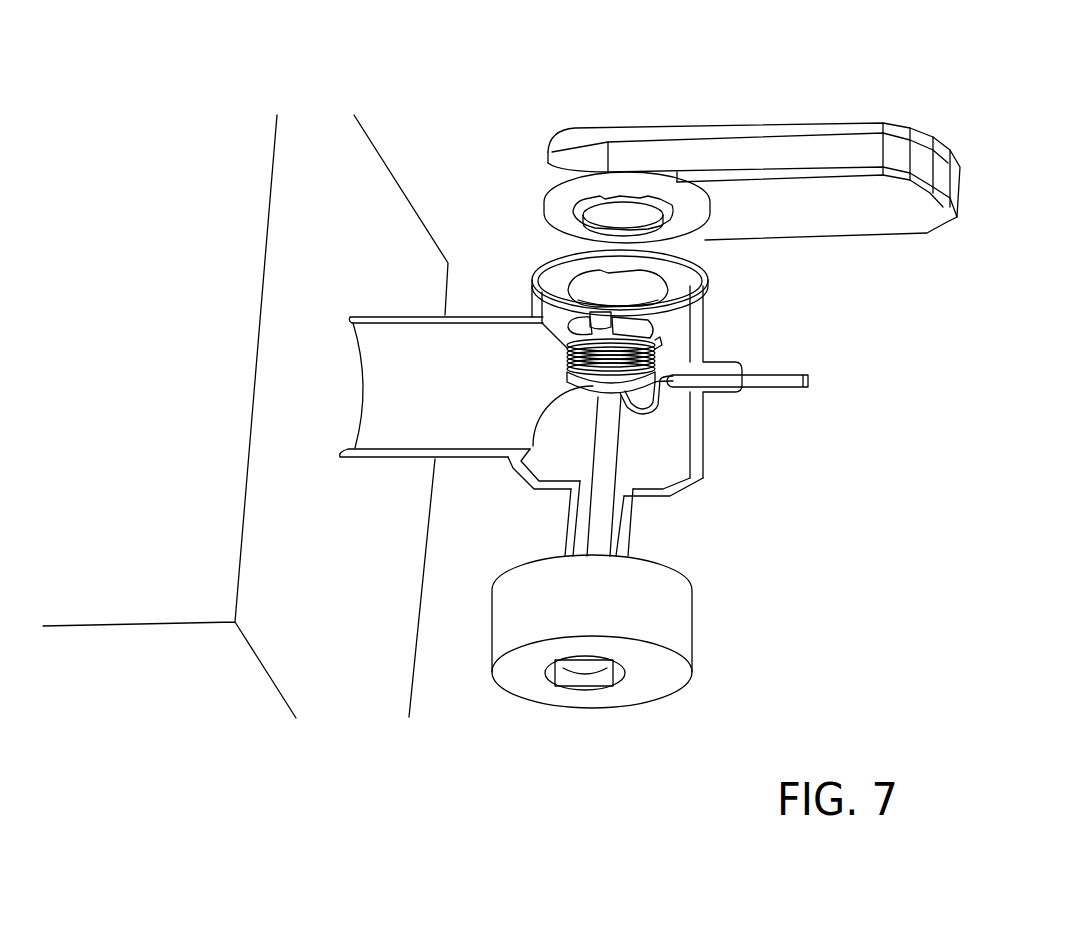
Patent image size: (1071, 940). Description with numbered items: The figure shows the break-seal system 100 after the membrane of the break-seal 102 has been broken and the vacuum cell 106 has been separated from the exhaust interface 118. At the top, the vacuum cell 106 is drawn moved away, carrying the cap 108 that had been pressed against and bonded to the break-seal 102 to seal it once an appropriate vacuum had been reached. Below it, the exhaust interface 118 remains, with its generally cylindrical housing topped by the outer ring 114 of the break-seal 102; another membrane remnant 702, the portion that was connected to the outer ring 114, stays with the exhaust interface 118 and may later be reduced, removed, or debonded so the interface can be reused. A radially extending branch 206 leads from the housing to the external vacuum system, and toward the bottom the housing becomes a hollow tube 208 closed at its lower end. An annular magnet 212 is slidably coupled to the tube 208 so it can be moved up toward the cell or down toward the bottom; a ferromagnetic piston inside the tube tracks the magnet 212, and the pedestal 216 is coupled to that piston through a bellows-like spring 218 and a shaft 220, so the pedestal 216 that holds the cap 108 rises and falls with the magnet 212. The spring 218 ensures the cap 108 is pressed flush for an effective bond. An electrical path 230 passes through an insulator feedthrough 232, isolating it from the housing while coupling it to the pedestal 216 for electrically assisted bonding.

The break-seal system 100 is at (473, 79).
The break-seal 102 is at (526, 280).
The vacuum cell 106 is at (755, 164).
The cap 108 is at (643, 240).
The outer ring 114 is at (680, 279).
The exhaust interface 118 is at (367, 230).
The radially extending branch 206 is at (423, 444).
The hollow tube 208 is at (620, 552).
The annular magnet 212 is at (612, 622).
The pedestal 216 is at (577, 320).
The bellows-like spring 218 is at (570, 361).
The shaft 220 is at (600, 522).
The electrical path 230 is at (633, 407).
The insulator feedthrough 232 is at (712, 395).
The membrane remnant 702 is at (655, 300).